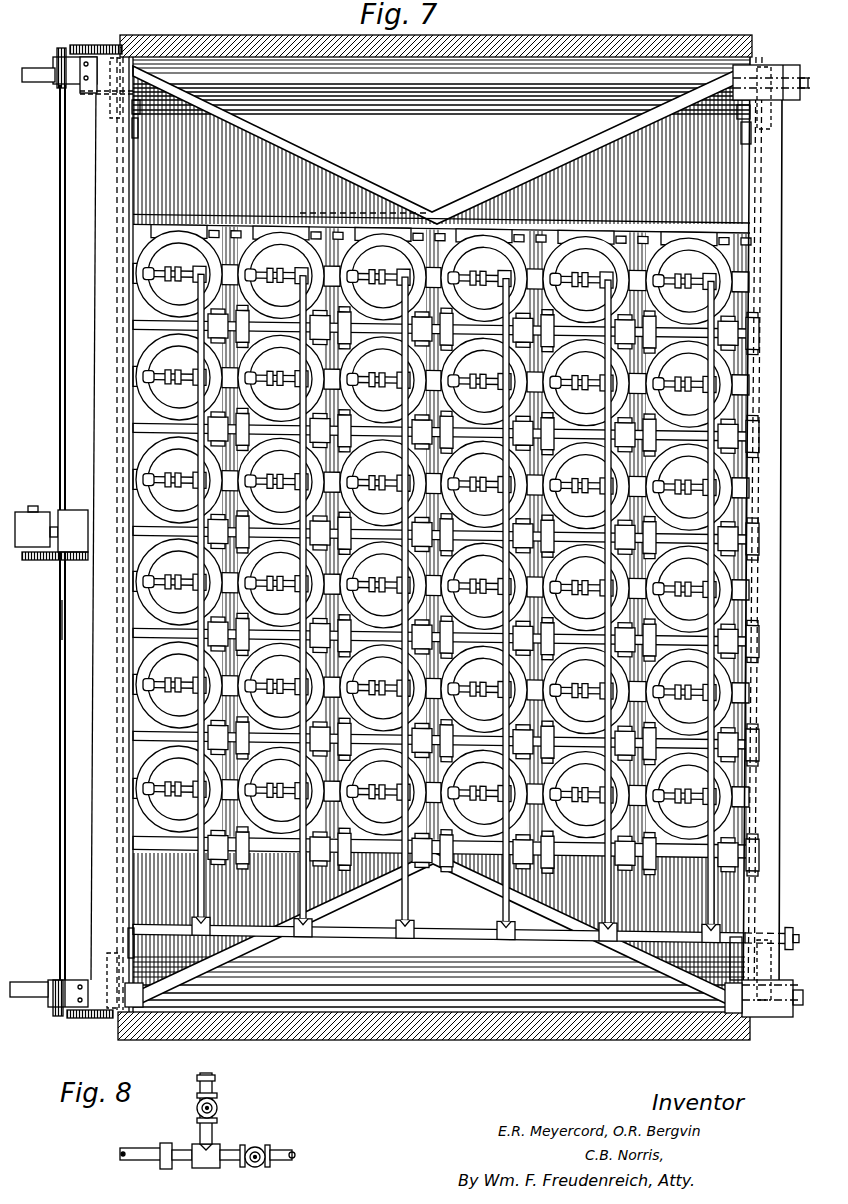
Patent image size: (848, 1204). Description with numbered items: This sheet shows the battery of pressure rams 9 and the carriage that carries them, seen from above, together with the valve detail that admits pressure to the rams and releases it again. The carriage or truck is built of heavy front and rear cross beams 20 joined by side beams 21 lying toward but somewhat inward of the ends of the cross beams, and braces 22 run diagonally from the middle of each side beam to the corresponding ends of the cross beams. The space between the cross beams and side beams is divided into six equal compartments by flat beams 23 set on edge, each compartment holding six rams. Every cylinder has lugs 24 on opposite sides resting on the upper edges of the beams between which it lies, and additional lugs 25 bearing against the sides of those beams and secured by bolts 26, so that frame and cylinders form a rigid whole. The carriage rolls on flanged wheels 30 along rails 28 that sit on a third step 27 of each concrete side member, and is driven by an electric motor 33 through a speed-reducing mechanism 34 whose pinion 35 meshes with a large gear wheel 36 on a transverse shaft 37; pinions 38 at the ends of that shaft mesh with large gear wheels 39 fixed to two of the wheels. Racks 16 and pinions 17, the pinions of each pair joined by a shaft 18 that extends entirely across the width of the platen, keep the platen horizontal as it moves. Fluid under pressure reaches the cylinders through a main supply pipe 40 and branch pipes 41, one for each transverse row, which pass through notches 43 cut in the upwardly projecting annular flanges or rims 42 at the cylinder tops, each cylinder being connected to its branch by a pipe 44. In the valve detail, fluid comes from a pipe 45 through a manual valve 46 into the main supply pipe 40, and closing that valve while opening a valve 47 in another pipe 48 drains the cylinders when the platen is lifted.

In FIG. 7, the pan 9 is at (282, 237).
In FIG. 7, the racks 16 is at (80, 95).
In FIG. 7, the pinions 17 is at (110, 118).
In FIG. 7, the shaft 18 is at (417, 105).
In FIG. 7, the front and rear cross beams 20 is at (105, 180).
In FIG. 7, the side beams 21 is at (666, 225).
In FIG. 7, the braces 22 is at (490, 196).
In FIG. 7, the flat beams 23 is at (140, 340).
In FIG. 7, the lugs 24 is at (178, 228).
In FIG. 7, the additional lugs 25 is at (249, 236).
In FIG. 7, the bolts 26 is at (336, 236).
In FIG. 7, the third step 27 is at (348, 90).
In FIG. 7, the rails 28 is at (293, 76).
In FIG. 7, the flanged wheels 30 is at (190, 28).
In FIG. 7, the electric motor 33 is at (76, 512).
In FIG. 7, the speed-reducing mechanism 34 is at (24, 514).
In FIG. 7, the pinion 35 is at (30, 560).
In FIG. 7, the large gear wheel 36 is at (72, 560).
In FIG. 7, the transverse shaft 37 is at (60, 645).
In FIG. 7, the pinions 38 is at (60, 48).
In FIG. 7, the large gear wheels 39 is at (110, 46).
In FIG. 7, the main supply pipe 40 is at (668, 926).
In FIG. 8, the main supply pipe 40 is at (120, 1153).
In FIG. 7, the branch pipes 41 is at (208, 884).
In FIG. 7, the annular flanges or rims 42 is at (145, 274).
In FIG. 7, the notches 43 is at (138, 290).
In FIG. 7, the pipe 44 is at (429, 524).
In FIG. 8, the pipe 45 is at (294, 1152).
In FIG. 8, the manual valve 46 is at (257, 1146).
In FIG. 8, the valve 47 is at (218, 1109).
In FIG. 8, the pipe 48 is at (200, 1131).